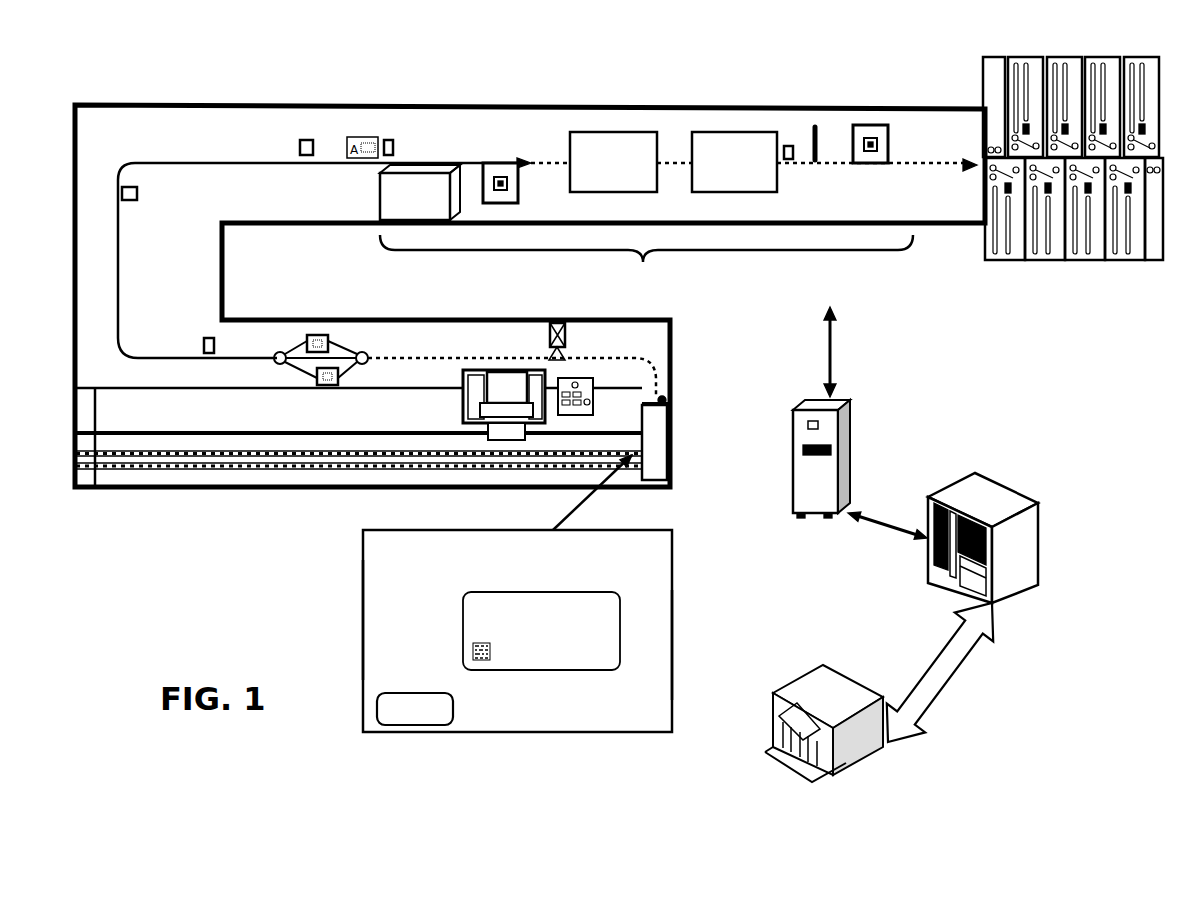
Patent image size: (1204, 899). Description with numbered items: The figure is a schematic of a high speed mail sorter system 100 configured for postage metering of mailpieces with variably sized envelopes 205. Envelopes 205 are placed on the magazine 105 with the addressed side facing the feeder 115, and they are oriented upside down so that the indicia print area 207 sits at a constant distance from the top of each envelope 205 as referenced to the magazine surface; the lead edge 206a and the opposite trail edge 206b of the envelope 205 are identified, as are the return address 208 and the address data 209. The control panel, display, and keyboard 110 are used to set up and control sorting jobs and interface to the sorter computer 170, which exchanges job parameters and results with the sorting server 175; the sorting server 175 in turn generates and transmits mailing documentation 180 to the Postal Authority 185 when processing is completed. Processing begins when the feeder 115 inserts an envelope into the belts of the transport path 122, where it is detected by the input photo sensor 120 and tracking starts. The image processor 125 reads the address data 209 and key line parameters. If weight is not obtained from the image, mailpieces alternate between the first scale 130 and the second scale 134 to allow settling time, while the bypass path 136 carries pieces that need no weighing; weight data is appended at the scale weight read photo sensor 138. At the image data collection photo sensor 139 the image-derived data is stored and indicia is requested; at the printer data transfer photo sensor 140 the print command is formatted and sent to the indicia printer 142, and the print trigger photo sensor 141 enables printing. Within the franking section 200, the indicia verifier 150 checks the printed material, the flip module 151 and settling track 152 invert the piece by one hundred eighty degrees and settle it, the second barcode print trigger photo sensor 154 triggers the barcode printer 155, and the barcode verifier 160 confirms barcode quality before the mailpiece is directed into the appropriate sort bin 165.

The high speed mail sorter system 100 is at (520, 43).
The magazine 105 is at (327, 468).
The control panel, display, and keyboard 110 is at (540, 410).
The feeder 115 is at (653, 438).
The input photo sensor 120 is at (670, 399).
The transport path 122 is at (625, 360).
The image processor 125 is at (555, 320).
The scale 1 130 is at (323, 337).
The scale 2 134 is at (337, 385).
The bypass path 136 is at (318, 372).
The scale weight read photo sensor 138 is at (209, 353).
The image data collection photo sensor 139 is at (132, 187).
The printer data transfer photo sensor 140 is at (307, 140).
The print trigger photo sensor 141 is at (388, 140).
The indicia printer 142 is at (411, 163).
The indicia verifier 150 is at (505, 163).
The 180 degree flip module 151 is at (608, 132).
The settling track 152 is at (727, 132).
The second barcode print trigger photo sensor 154 is at (789, 146).
The barcode printer 155 is at (815, 125).
The barcode verifier 160 is at (866, 127).
The sort bin 165 is at (1112, 250).
The sorter computer 170 is at (850, 428).
The sorting server 175 is at (1035, 520).
The mailing documentation 180 is at (998, 630).
The Postal Authority 185 is at (847, 678).
The franking section 200 is at (643, 262).
The envelope 205 is at (672, 590).
The lead edge 206a is at (673, 638).
The trail edge 206b is at (360, 612).
The indicia print area 207 is at (422, 692).
The return address 208 is at (598, 713).
The address data 209 is at (580, 617).